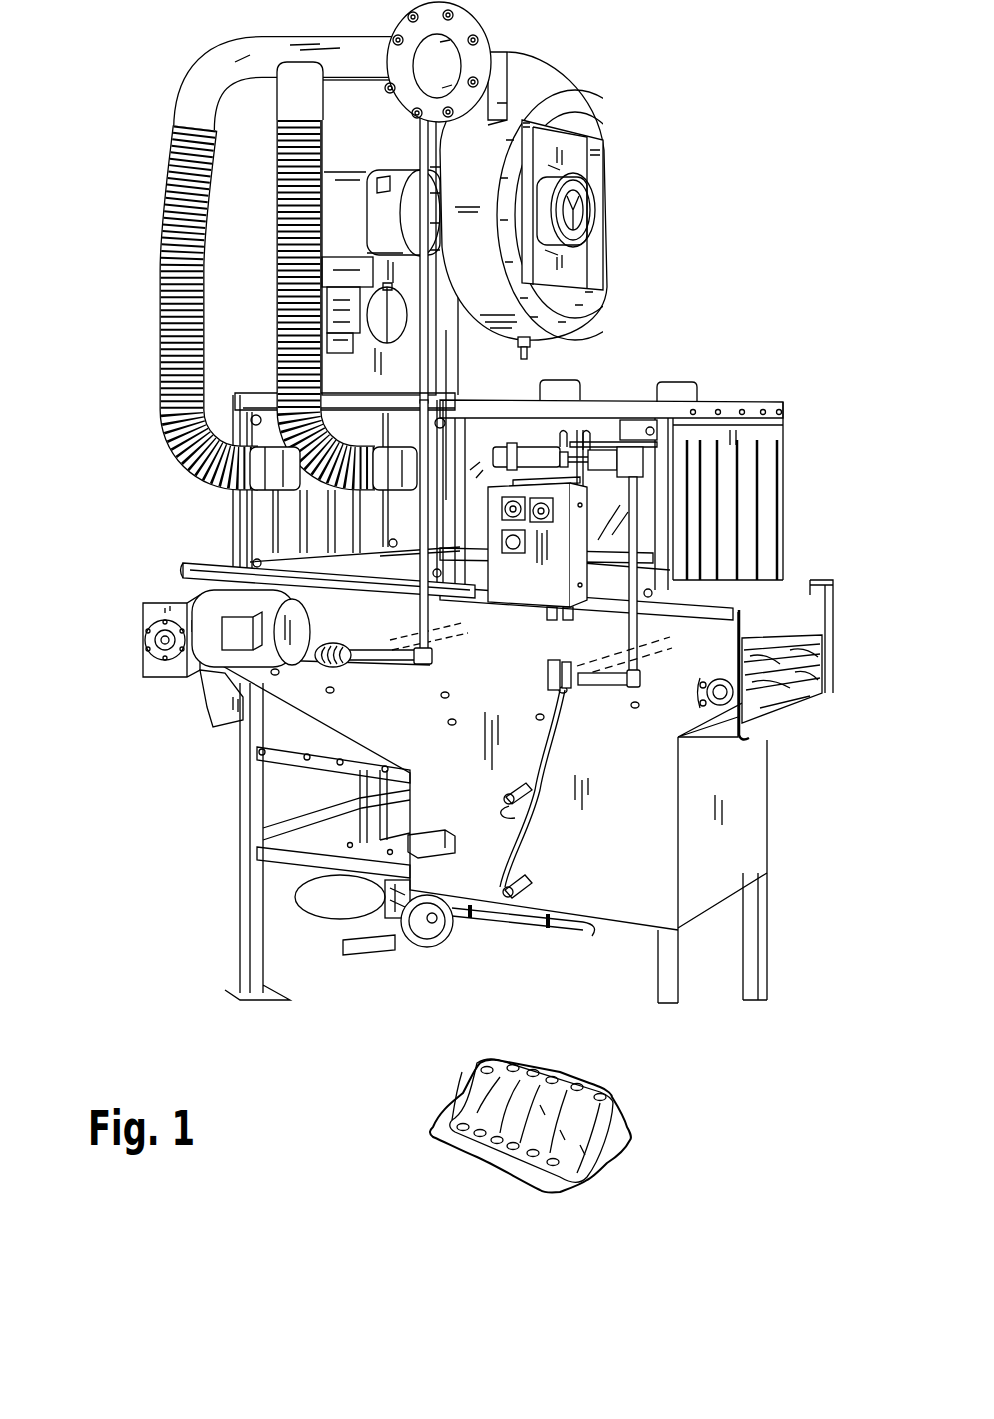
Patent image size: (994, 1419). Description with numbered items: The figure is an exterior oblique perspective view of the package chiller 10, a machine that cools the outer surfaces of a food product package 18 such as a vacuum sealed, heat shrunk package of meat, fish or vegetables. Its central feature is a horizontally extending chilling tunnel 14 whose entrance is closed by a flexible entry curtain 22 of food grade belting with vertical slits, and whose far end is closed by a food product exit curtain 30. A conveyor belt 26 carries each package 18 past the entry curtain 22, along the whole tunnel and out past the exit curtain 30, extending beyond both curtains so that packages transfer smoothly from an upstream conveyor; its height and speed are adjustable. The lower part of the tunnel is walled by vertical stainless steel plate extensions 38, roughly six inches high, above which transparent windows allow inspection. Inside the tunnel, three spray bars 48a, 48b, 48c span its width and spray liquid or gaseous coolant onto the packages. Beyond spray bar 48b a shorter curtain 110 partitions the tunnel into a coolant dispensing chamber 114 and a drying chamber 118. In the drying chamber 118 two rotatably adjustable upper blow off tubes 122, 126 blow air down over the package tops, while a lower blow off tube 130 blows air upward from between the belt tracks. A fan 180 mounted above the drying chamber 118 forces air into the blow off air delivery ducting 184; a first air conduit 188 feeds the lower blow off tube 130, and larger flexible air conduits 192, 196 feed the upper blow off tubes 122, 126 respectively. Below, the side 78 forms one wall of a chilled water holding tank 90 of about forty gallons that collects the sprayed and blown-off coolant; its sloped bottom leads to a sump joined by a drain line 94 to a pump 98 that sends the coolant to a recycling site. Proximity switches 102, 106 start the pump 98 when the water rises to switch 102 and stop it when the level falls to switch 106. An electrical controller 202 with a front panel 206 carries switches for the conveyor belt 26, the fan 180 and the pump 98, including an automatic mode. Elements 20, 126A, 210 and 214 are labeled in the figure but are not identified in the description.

The package chiller 10 is at (466, 617).
The chilling tunnel 14 is at (466, 617).
The food product package 18 is at (569, 1074).
The flash on workpiece 20 is at (538, 1173).
The flexible entry curtain 22 is at (768, 453).
The conveyor belt 26 is at (777, 640).
The food product exit curtain 30 is at (257, 522).
The vertical stainless steel plate extensions 38 is at (640, 1128).
The spray bar 48a is at (607, 453).
The spray bar 48b is at (550, 453).
The spray bar 48c is at (667, 637).
The side 78 is at (482, 718).
The chilled water holding tank 90 is at (740, 828).
The drain line 94 is at (477, 923).
The pump 98 is at (343, 913).
The proximity switch 102 is at (510, 793).
The proximity switch 106 is at (507, 897).
The curtain 110 is at (475, 565).
The coolant dispensing chamber 114 is at (665, 305).
The drying chamber 118 is at (270, 390).
The upper blow off tube 122 is at (440, 497).
The upper blow off tube 126 is at (322, 478).
The top rail 126A is at (583, 407).
The lower blow off tube 130 is at (397, 640).
The fan 180 is at (623, 180).
The blow off air delivery ducting 184 is at (160, 103).
The first air conduit 188 is at (418, 147).
The flexible air conduit 192 is at (270, 250).
The flexible air conduit 196 is at (165, 247).
The electrical controller 202 is at (600, 567).
The front panel 206 is at (502, 599).
The gear motor 210 is at (143, 653).
The mounting bracket 214 is at (213, 697).